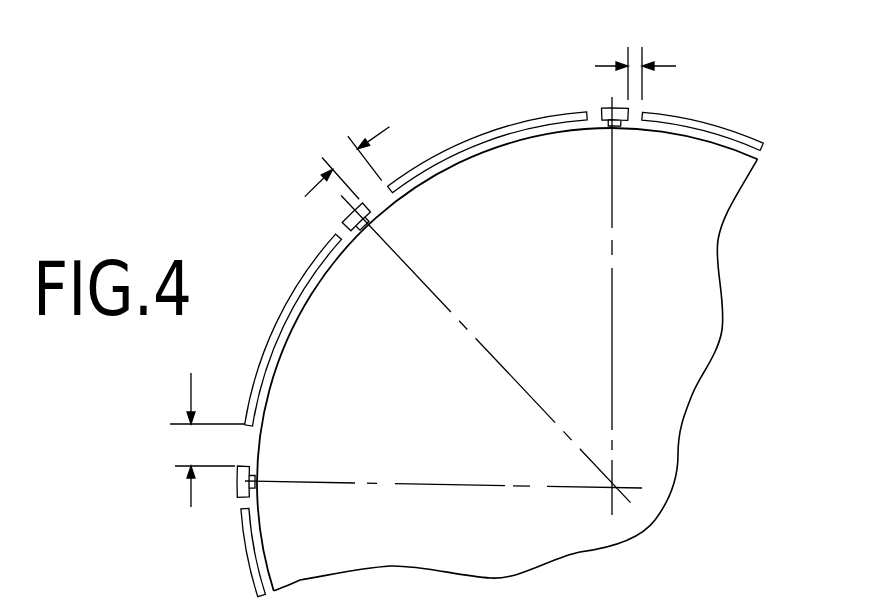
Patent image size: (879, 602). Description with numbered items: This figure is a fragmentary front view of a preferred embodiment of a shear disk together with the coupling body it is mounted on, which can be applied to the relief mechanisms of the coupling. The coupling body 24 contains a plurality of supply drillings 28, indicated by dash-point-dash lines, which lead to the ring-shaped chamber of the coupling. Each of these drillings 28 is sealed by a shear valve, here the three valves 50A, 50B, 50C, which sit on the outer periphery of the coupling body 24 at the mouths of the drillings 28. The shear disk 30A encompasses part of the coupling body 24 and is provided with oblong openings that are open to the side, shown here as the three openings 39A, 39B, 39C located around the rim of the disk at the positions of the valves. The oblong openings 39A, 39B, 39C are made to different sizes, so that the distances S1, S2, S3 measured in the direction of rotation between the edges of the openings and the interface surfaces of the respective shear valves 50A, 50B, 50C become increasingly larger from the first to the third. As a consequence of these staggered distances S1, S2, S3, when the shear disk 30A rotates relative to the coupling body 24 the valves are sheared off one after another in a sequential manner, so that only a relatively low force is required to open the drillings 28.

The coupling body 24 is at (571, 321).
The supply drillings 28 is at (485, 349).
The shear disk 30A is at (488, 112).
The oblong opening 39A is at (703, 161).
The oblong opening 39B is at (507, 359).
The oblong opening 39C is at (307, 415).
The shear valve 50A is at (585, 63).
The shear valve 50B is at (301, 223).
The shear valve 50C is at (307, 502).
The distance S1 is at (635, 50).
The distance S2 is at (335, 153).
The distance S3 is at (182, 440).